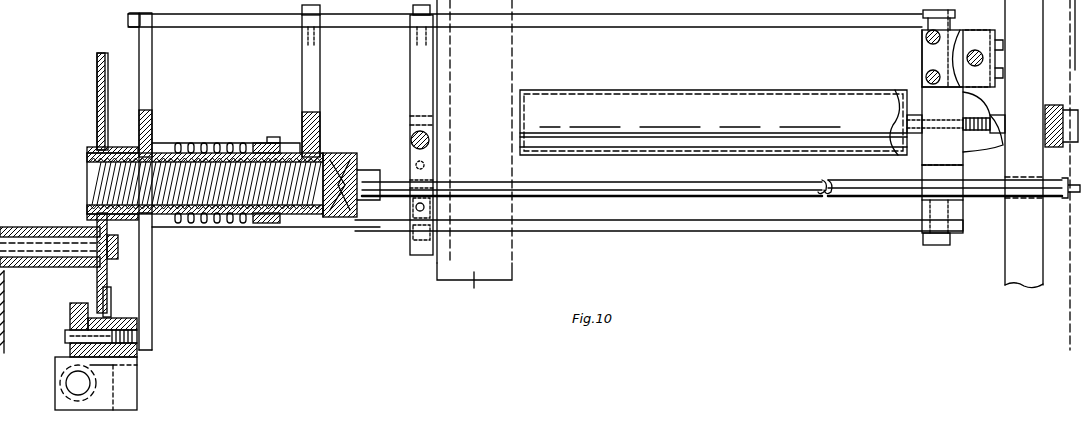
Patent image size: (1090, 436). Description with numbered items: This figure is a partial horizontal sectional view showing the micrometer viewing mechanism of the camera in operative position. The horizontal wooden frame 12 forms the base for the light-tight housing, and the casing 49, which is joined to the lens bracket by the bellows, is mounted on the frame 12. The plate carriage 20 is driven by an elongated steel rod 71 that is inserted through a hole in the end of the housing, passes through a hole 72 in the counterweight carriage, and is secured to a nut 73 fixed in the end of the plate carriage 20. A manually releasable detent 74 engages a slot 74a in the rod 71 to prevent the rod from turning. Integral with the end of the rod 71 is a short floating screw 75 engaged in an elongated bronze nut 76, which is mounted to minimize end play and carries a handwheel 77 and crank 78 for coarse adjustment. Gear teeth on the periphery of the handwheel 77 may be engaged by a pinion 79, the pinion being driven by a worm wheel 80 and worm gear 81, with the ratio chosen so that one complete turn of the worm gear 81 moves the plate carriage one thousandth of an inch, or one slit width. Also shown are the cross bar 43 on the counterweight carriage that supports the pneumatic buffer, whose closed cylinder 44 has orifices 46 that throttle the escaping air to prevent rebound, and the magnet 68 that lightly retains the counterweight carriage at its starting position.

The horizontal wooden frame 12 is at (474, 284).
The plate carriage 20 is at (1070, 290).
The cross bar 43 is at (1024, 144).
The closed cylinder 44 is at (663, 90).
The orifices 46 is at (560, 90).
The casing 49 is at (432, 268).
The magnet 68 is at (968, 32).
The elongated steel rod 71 is at (785, 196).
The hole 72 is at (1006, 203).
The nut 73 is at (1064, 206).
The manually releasable detent 74 is at (428, 181).
The slot 74a is at (530, 183).
The short floating screw 75 is at (334, 217).
The elongated bronze nut 76 is at (294, 220).
The handwheel 77 is at (97, 270).
The crank 78 is at (43, 267).
The pinion 79 is at (108, 312).
The worm wheel 80 is at (74, 305).
The worm gear 81 is at (62, 380).